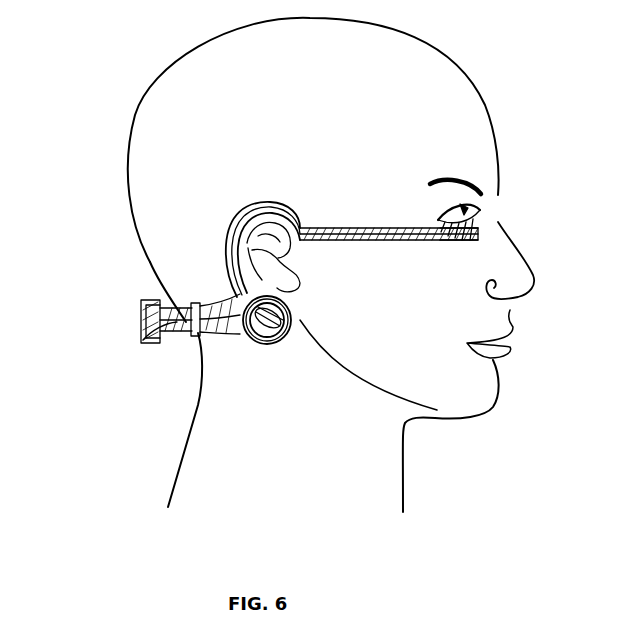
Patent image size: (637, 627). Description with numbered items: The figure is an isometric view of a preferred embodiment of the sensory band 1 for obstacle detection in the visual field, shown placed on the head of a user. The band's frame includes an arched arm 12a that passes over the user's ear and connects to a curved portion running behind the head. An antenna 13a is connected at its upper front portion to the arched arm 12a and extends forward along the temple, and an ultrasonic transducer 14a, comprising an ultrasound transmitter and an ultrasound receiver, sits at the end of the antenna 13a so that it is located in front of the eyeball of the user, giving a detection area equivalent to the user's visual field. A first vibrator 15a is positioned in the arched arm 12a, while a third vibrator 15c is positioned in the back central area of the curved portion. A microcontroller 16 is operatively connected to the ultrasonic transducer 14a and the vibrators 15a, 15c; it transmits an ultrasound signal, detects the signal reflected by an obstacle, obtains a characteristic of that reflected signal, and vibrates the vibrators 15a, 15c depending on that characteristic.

The sensory band 1 is at (106, 154).
The arched arm 12a is at (230, 222).
The antenna 13a is at (368, 230).
The ultrasonic transducer 14a is at (480, 231).
The first vibrator 15a is at (283, 345).
The third vibrator 15c is at (143, 340).
The microcontroller 16 is at (106, 277).